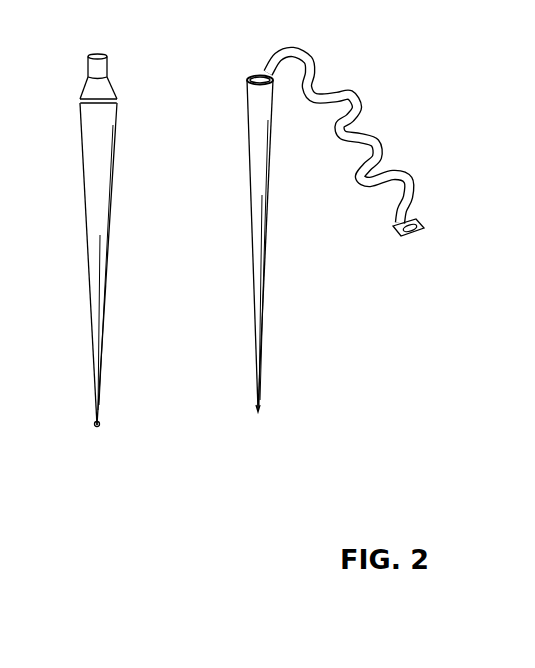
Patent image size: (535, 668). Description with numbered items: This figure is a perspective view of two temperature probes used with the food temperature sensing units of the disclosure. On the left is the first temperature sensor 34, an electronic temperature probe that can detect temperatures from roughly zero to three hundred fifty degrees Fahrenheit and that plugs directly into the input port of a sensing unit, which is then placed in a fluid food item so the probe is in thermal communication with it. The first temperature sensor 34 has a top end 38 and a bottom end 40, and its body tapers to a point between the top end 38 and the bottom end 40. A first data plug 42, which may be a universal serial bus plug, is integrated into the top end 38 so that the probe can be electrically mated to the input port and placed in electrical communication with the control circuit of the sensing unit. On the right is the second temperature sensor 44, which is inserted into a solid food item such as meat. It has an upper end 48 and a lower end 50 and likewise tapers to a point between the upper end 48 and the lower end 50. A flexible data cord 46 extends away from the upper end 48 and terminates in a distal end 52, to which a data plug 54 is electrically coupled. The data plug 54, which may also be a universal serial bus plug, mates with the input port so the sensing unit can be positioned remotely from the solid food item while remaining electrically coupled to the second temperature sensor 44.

The first temperature sensor 34 is at (82, 218).
The top end 38 is at (110, 68).
The first data plug 42 is at (87, 68).
The bottom end 40 is at (95, 430).
The second temperature sensor 44 is at (252, 218).
The upper end 48 is at (252, 75).
The lower end 50 is at (257, 414).
The data cord 46 is at (342, 92).
The distal end 52 is at (415, 216).
The data plug 54 is at (410, 240).